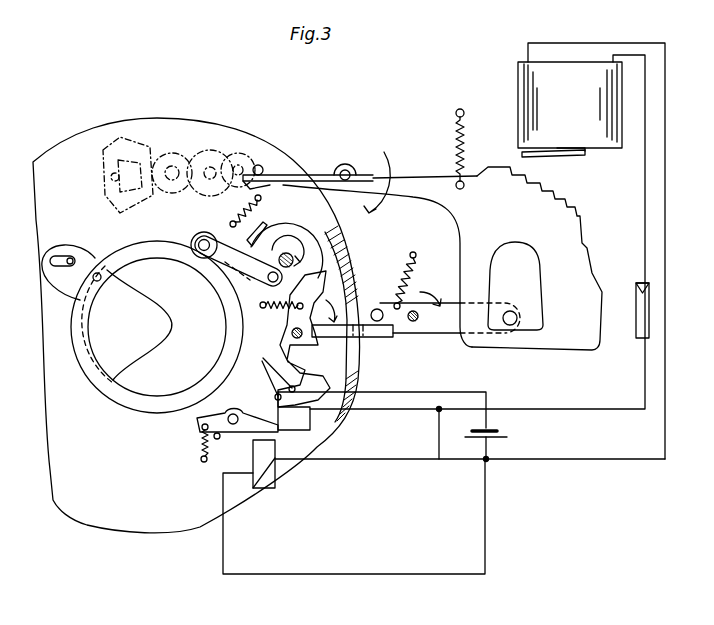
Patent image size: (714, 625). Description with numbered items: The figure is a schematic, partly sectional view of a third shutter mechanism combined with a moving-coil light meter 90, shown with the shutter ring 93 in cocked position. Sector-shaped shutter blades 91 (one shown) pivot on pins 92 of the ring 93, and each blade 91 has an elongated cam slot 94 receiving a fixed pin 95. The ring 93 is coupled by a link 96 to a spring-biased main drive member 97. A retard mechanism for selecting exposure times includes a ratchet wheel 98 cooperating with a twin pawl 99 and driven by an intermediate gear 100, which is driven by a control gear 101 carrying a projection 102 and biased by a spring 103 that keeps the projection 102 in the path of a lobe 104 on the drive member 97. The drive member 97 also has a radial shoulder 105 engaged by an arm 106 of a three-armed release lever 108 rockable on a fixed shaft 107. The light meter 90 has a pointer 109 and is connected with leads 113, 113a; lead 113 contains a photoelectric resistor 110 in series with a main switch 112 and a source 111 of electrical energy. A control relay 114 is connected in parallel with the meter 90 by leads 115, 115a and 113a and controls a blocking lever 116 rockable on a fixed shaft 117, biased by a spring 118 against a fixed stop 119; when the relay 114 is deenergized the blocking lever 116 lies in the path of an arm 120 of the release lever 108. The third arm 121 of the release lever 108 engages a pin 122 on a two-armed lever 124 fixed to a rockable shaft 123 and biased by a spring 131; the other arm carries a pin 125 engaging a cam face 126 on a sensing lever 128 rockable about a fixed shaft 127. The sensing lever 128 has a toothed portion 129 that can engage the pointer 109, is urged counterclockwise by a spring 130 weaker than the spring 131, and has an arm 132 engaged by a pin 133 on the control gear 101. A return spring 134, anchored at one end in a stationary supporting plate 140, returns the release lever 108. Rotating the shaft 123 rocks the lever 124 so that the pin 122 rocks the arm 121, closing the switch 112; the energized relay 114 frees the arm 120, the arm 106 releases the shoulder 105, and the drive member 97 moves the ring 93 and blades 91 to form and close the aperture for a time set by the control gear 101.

The light meter 90 is at (532, 75).
The shutter blades 91 is at (123, 310).
The pins 92 is at (100, 265).
The shutter ring 93 is at (120, 397).
The cam slot 94 is at (55, 255).
The fixed pin 95 is at (67, 265).
The link 96 is at (220, 268).
The main drive member 97 is at (307, 217).
The ratchet wheel 98 is at (167, 148).
The twin pawl 99 is at (113, 157).
The intermediate gear 100 is at (213, 147).
The control gear 101 is at (243, 157).
The projection 102 is at (303, 175).
The spring 103 is at (232, 212).
The lobe 104 is at (253, 243).
The shoulder 105 is at (313, 270).
The arm 106 is at (323, 283).
The fixed shaft 107 is at (292, 333).
The release lever 108 is at (298, 358).
The pointer 109 is at (543, 158).
The photoelectric resistor 110 is at (636, 295).
The source of electrical energy 111 is at (500, 434).
The main switch 112 is at (285, 383).
The lead 113 is at (613, 412).
The lead 113a is at (583, 462).
The control relay 114 is at (258, 480).
The lead 115 is at (370, 458).
The lead 115a is at (345, 575).
The blocking lever 116 is at (282, 430).
The fixed shaft 117 is at (197, 422).
The spring 118 is at (200, 450).
The fixed stop 119 is at (218, 440).
The arm 120 is at (337, 427).
The third arm 121 is at (377, 336).
The pin 122 is at (377, 309).
The rockable shaft 123 is at (417, 318).
The two-armed lever 124 is at (453, 327).
The pin 125 is at (510, 311).
The cam face 126 is at (527, 327).
The fixed shaft 127 is at (348, 170).
The sensing lever 128 is at (458, 220).
The toothed portion 129 is at (555, 202).
The spring 130 is at (453, 130).
The spring 131 is at (413, 273).
The arm 132 is at (283, 188).
The pin 133 is at (270, 170).
The return spring 134 is at (262, 306).
The supporting plate 140 is at (126, 523).